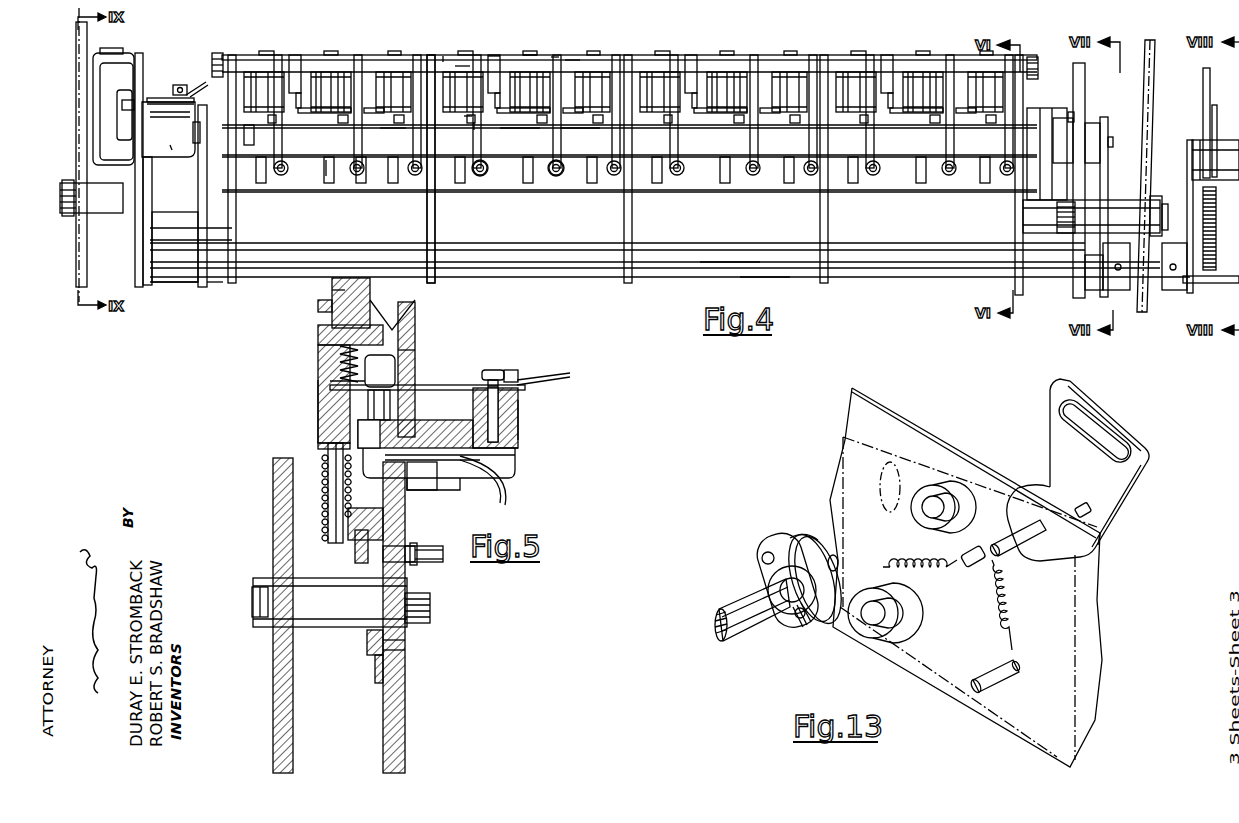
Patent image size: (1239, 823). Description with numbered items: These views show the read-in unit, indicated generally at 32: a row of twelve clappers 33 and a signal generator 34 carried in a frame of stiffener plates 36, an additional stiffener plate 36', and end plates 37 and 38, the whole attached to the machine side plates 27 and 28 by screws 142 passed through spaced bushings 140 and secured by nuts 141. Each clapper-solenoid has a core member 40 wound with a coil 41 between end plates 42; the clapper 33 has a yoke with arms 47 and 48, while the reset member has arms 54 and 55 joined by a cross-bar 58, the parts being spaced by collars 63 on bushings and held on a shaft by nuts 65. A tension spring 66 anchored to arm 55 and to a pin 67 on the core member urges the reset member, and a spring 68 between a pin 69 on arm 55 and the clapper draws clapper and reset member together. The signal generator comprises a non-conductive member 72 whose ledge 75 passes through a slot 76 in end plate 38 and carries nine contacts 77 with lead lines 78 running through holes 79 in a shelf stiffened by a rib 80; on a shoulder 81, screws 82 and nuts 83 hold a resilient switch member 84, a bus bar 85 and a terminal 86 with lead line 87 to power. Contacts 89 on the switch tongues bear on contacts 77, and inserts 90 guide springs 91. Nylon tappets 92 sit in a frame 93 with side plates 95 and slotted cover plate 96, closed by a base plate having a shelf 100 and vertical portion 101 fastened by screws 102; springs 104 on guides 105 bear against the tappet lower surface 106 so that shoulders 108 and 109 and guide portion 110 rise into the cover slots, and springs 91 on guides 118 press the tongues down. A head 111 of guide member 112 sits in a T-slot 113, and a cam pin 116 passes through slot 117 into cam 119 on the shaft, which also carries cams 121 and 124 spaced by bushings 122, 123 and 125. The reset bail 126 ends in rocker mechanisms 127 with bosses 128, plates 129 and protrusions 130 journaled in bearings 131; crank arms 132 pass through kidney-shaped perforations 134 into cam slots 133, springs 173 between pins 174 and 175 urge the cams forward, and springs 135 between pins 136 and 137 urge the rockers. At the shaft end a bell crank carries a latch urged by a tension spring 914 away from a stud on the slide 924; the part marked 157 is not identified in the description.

In FIG. 4, the side plate 27 is at (1148, 298).
In FIG. 4, the side plate 28 is at (88, 268).
In FIG. 4, the frame rail 32 is at (766, 278).
In FIG. 4, the clapper 33 is at (325, 54).
In FIG. 4, the signal generator 34 is at (143, 58).
In FIG. 4, the stiffener plate 36 is at (717, 169).
In FIG. 4, the additional stiffener plate 36' is at (227, 196).
In FIG. 4, the end plate 37 is at (1076, 84).
In FIG. 13, the end plate 37 is at (1074, 724).
In FIG. 5, the end plate 38 is at (405, 706).
In FIG. 4, the core member 40 is at (326, 168).
In FIG. 4, the coil of conductive wire 41 is at (527, 138).
In FIG. 4, the end plate 42 is at (607, 138).
In FIG. 4, the arm of clapper yoke 47 is at (297, 58).
In FIG. 4, the arm of clapper yoke 48 is at (354, 56).
In FIG. 4, the arm of reset member yoke 54 is at (244, 55).
In FIG. 4, the arm of reset member 55 is at (283, 172).
In FIG. 4, the cross-bar 58 is at (268, 66).
In FIG. 4, the collar 63 is at (372, 60).
In FIG. 4, the nut 65 is at (216, 52).
In FIG. 4, the tension spring 66 is at (357, 170).
In FIG. 4, the pin 67 is at (356, 182).
In FIG. 4, the spring 68 is at (667, 134).
In FIG. 4, the pin 69 is at (270, 120).
In FIG. 4, the elongated member 72 is at (186, 158).
In FIG. 5, the elongated member 72 is at (526, 428).
In FIG. 4, the ledge portion 75 is at (118, 132).
In FIG. 5, the ledge portion 75 is at (454, 428).
In FIG. 5, the slot 76 is at (414, 370).
In FIG. 4, the electrical contact 77 is at (133, 117).
In FIG. 5, the electrical contact 77 is at (400, 402).
In FIG. 4, the lead line 78 is at (170, 148).
In FIG. 5, the lead line 78 is at (505, 492).
In FIG. 5, the elongated hole 79 is at (484, 456).
In FIG. 5, the reinforcing rib 80 is at (462, 496).
In FIG. 5, the raised shoulder 81 is at (520, 412).
In FIG. 5, the screw 82 is at (518, 446).
In FIG. 4, the nut 83 is at (172, 88).
In FIG. 5, the nut 83 is at (490, 368).
In FIG. 4, the resilient multiple switch member 84 is at (173, 102).
In FIG. 5, the resilient multiple switch member 84 is at (427, 379).
In FIG. 4, the conductive bus bar 85 is at (166, 98).
In FIG. 5, the conductive bus bar 85 is at (524, 388).
In FIG. 4, the terminal 86 is at (190, 86).
In FIG. 5, the terminal 86 is at (520, 378).
In FIG. 4, the lead line 87 is at (204, 84).
In FIG. 5, the lead line 87 is at (556, 377).
In FIG. 4, the contact 89 is at (132, 107).
In FIG. 5, the contact 89 is at (378, 390).
In FIG. 5, the insert 90 is at (320, 386).
In FIG. 5, the compression spring 91 is at (318, 350).
In FIG. 4, the tappet 92 is at (114, 48).
In FIG. 5, the tappet 92 is at (312, 404).
In FIG. 4, the frame 93 is at (113, 109).
In FIG. 5, the frame 93 is at (398, 300).
In FIG. 5, the side plate 95 is at (408, 500).
In FIG. 5, the cover plate 96 is at (318, 310).
In FIG. 5, the horizontal shelf 100 is at (364, 518).
In FIG. 5, the vertical portion 101 is at (366, 590).
In FIG. 5, the screw 102 is at (356, 566).
In FIG. 5, the compression spring 104 is at (324, 460).
In FIG. 5, the spring guide 105 is at (334, 545).
In FIG. 5, the lower surface 106 is at (312, 446).
In FIG. 5, the shoulder 108 is at (318, 328).
In FIG. 5, the shoulder 109 is at (412, 322).
In FIG. 5, the central guide portion 110 is at (330, 292).
In FIG. 5, the head 111 is at (366, 648).
In FIG. 5, the guide member 112 is at (403, 646).
In FIG. 5, the T-slot 113 is at (374, 666).
In FIG. 4, the cam pin 116 is at (150, 175).
In FIG. 5, the cam pin 116 is at (424, 564).
In FIG. 5, the vertical slot 117 is at (410, 546).
In FIG. 5, the guide 118 is at (340, 358).
In FIG. 4, the cam 119 is at (150, 220).
In FIG. 4, the cam 121 is at (200, 220).
In FIG. 4, the spacer bushing 122 is at (176, 280).
In FIG. 4, the bushing 123 is at (210, 282).
In FIG. 4, the cam 124 is at (1106, 166).
In FIG. 13, the cam 124 is at (1078, 470).
In FIG. 4, the spacer bushing 125 is at (1086, 296).
In FIG. 13, the spacer bushing 125 is at (886, 636).
In FIG. 4, the reset bail 126 is at (684, 138).
In FIG. 13, the reset bail 126 is at (744, 626).
In FIG. 13, the rocker mechanism 127 is at (808, 538).
In FIG. 4, the boss 128 is at (244, 146).
In FIG. 13, the boss 128 is at (768, 588).
In FIG. 4, the plate 129 is at (1070, 112).
In FIG. 13, the plate 129 is at (816, 556).
In FIG. 13, the cylindrical protrusion 130 is at (838, 564).
In FIG. 4, the bearing 131 is at (1095, 122).
In FIG. 13, the bearing 131 is at (950, 500).
In FIG. 4, the crank arm 132 is at (192, 130).
In FIG. 13, the crank arm 132 is at (766, 546).
In FIG. 13, the slot 133 is at (1062, 412).
In FIG. 13, the kidney shaped perforation 134 is at (896, 472).
In FIG. 13, the tension spring 135 is at (928, 564).
In FIG. 13, the pin 136 is at (806, 624).
In FIG. 13, the pin 137 is at (968, 568).
In FIG. 4, the spaced bushing 140 is at (92, 204).
In FIG. 4, the nut 141 is at (1057, 232).
In FIG. 4, the screw 142 is at (74, 214).
In FIG. 5, the top block 157 is at (368, 294).
In FIG. 13, the tension spring 173 is at (1008, 606).
In FIG. 13, the pin 174 is at (1092, 510).
In FIG. 13, the pin 175 is at (996, 688).
In FIG. 4, the tension spring 914 is at (1216, 238).
In FIG. 4, the slide 924 is at (1210, 74).